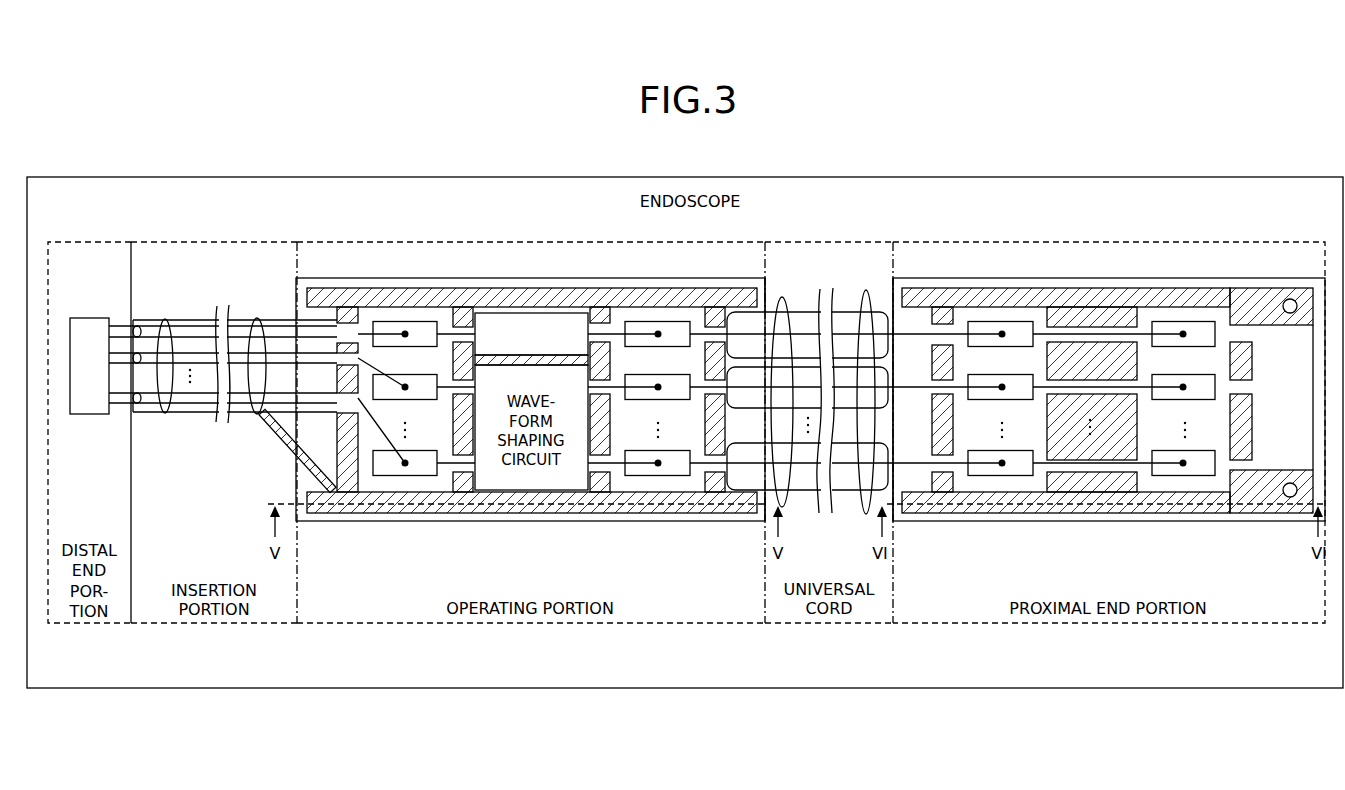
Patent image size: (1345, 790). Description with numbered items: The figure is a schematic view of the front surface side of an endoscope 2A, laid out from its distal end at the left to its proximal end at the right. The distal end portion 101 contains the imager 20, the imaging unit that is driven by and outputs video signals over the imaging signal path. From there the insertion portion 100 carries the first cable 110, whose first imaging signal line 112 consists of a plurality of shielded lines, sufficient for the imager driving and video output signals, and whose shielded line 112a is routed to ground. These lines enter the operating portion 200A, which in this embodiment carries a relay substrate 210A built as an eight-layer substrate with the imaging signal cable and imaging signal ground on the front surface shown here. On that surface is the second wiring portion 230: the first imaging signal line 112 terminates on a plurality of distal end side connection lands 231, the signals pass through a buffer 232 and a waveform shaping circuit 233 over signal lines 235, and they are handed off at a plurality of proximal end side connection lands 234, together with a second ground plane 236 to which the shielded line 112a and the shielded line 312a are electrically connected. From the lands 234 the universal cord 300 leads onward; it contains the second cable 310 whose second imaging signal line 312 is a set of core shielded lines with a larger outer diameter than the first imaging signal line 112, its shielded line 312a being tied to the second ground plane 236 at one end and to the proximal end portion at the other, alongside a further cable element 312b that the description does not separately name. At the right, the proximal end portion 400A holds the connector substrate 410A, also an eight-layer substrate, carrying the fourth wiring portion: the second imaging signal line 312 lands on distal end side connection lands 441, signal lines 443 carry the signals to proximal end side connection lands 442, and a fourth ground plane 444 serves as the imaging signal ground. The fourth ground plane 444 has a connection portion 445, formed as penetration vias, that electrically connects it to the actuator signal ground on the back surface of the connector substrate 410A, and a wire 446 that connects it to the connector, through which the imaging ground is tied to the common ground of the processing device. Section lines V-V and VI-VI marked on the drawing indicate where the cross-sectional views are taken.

The endoscope 2A is at (1218, 177).
The imager 20 is at (88, 318).
The insertion portion 100 is at (212, 241).
The distal end portion 101 is at (90, 241).
The first cable 110 is at (247, 319).
The first imaging signal line 112 is at (156, 320).
The shielded line 112a is at (276, 429).
The operating portion 200A is at (384, 241).
The relay substrate 210A is at (455, 269).
The second wiring portion 230 is at (509, 278).
The distal end side connection lands 231 is at (411, 321).
The buffer 232 is at (548, 312).
The waveform shaping circuit 233 is at (556, 514).
The proximal end side connection lands 234 is at (632, 321).
The signal lines 235 is at (465, 318).
The second ground plane 236 is at (321, 288).
The universal cord 300 is at (829, 241).
The second cable 310 is at (863, 284).
The second imaging signal line 312 is at (806, 294).
The shielded line 312a is at (767, 504).
The cable end at proximal end portion 312b is at (898, 500).
The proximal end portion 400A is at (941, 241).
The connector substrate 410A is at (1151, 278).
The distal end side connection lands 441 is at (1006, 320).
The proximal end side connection lands 442 is at (1201, 320).
The signal lines 443 is at (1107, 324).
The fourth ground plane 444 is at (1202, 513).
The connection portion 445 is at (1290, 298).
The wire 446 is at (1314, 400).